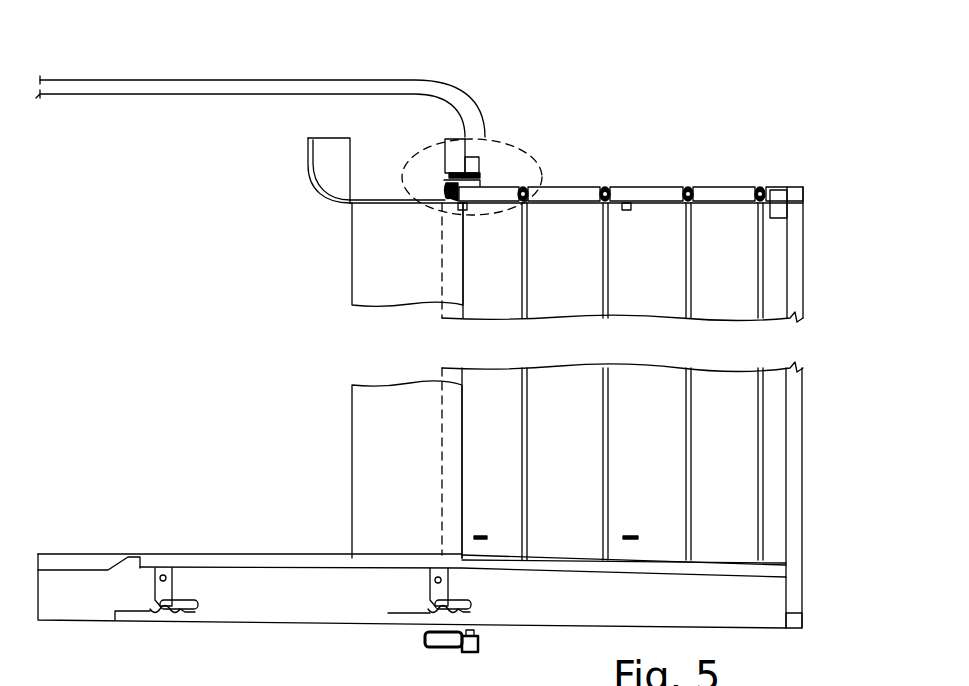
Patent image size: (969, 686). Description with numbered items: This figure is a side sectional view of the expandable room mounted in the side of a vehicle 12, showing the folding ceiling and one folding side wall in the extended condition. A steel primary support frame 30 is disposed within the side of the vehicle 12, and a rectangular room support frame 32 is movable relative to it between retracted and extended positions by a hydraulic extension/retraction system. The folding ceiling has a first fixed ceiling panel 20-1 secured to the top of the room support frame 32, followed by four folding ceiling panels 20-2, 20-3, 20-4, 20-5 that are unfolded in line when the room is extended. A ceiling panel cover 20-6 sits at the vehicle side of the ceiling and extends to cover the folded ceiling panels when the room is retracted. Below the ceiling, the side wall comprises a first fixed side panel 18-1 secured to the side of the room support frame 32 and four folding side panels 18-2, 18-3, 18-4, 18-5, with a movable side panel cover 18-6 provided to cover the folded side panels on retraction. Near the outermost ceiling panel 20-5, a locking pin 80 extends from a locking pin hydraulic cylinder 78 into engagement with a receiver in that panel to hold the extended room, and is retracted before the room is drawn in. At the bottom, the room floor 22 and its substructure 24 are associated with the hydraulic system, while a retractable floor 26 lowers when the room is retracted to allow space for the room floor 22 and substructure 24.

The vehicle 12 is at (230, 80).
The primary support frame 30 is at (480, 172).
The locking pin hydraulic cylinder 78 is at (472, 165).
The folding ceiling panel 20-5 is at (493, 184).
The folding ceiling panel 20-4 is at (565, 187).
The folding ceiling panel 20-3 is at (652, 187).
The folding ceiling panel 20-2 is at (715, 187).
The first fixed ceiling panel 20-1 is at (767, 187).
The ceiling panel cover 20-6 is at (312, 173).
The movable side panel cover 18-6 is at (352, 257).
The folding side panel 18-5 is at (500, 268).
The folding side panel 18-4 is at (576, 274).
The folding side panel 18-3 is at (653, 274).
The folding side panel 18-2 is at (734, 274).
The first fixed side panel 18-1 is at (773, 276).
The room support frame 32 is at (797, 200).
The locking pin 80 is at (780, 213).
The room floor 22 is at (775, 573).
The substructure 24 is at (618, 618).
The retractable floor 26 is at (243, 578).